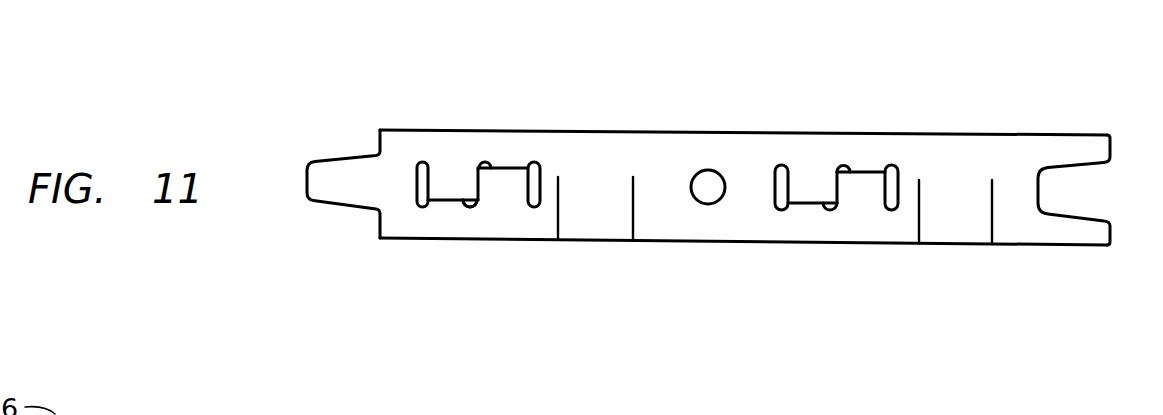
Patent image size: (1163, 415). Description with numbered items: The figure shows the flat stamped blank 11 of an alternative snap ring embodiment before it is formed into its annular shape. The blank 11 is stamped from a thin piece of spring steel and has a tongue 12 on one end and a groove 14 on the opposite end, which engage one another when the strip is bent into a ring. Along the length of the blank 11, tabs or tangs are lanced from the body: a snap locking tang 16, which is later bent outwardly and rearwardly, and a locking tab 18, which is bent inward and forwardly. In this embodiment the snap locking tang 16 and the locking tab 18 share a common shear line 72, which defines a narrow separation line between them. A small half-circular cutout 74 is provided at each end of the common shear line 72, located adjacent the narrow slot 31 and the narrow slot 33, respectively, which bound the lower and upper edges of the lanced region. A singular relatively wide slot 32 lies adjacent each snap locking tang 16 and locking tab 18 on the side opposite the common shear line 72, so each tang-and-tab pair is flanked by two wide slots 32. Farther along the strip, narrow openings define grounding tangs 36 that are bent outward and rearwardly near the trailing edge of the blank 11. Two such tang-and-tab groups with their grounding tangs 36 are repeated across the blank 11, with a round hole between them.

The blank 11 is at (648, 96).
The tongue 12 is at (342, 168).
The groove 14 is at (1040, 187).
The snap locking tang 16 is at (452, 177).
The locking tab 18 is at (503, 182).
The narrow slot or shear line 31 is at (447, 203).
The wide slot 32 is at (420, 163).
The narrow slot 33 is at (510, 168).
The grounding tang 36 is at (620, 216).
The common shear line 72 is at (494, 190).
The half-circular cutout 74 is at (468, 207).